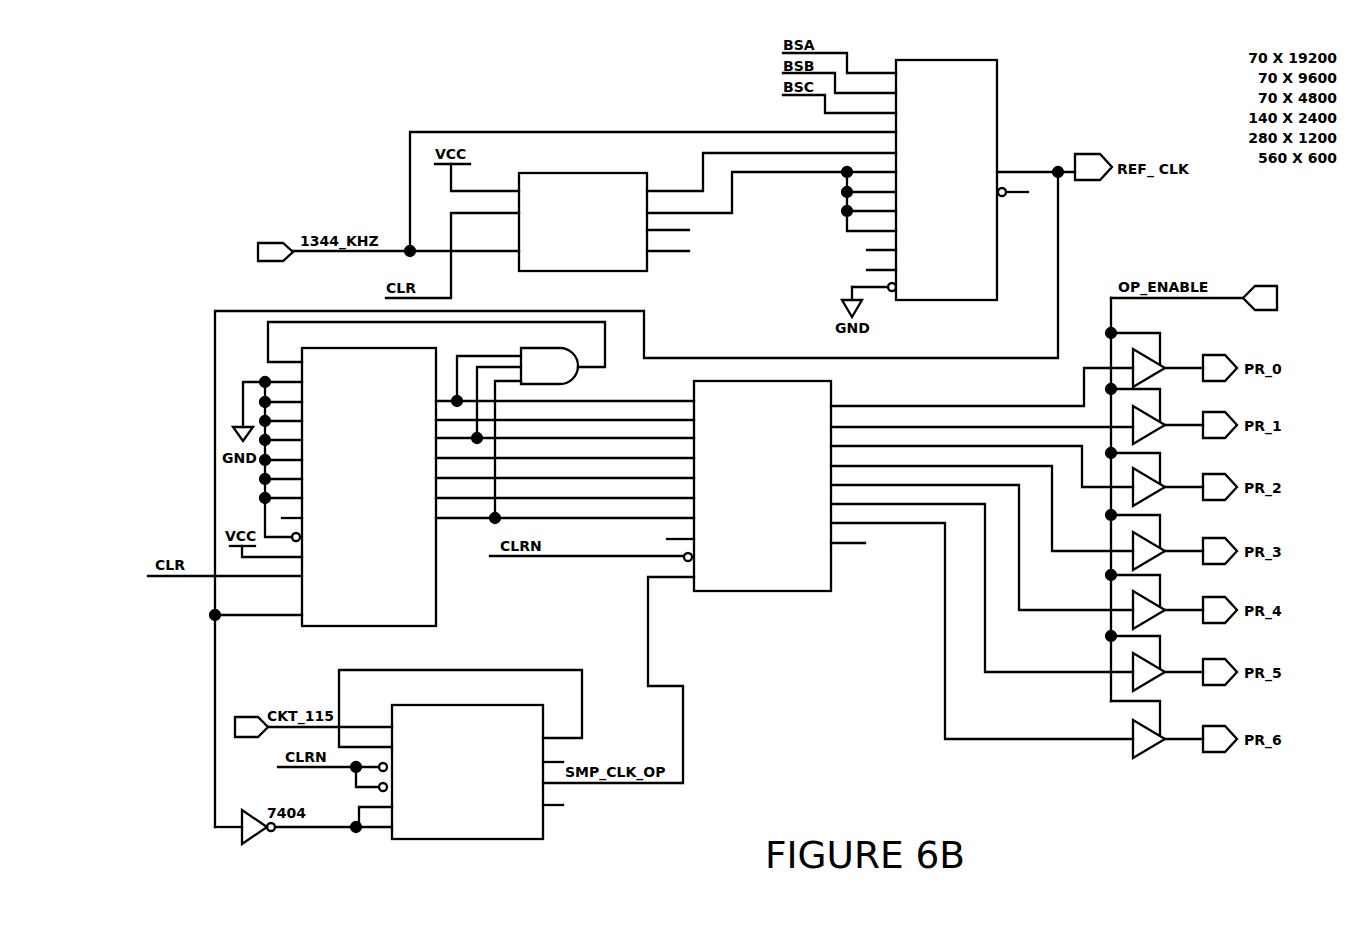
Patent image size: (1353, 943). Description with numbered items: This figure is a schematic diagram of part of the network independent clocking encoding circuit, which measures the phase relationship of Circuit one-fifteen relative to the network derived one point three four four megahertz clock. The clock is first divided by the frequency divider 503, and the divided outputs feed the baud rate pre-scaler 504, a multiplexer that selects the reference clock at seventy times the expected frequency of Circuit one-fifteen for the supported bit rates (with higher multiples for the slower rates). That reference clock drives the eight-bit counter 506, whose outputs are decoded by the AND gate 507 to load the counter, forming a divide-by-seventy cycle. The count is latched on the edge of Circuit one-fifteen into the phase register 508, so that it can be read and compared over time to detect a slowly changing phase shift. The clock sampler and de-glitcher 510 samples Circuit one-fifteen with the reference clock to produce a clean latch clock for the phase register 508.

The frequency divider (FREQDIV) 503 is at (578, 272).
The baud rate pre-scaler multiplexer (74151) 504 is at (984, 58).
The 8-bit counter phase comparator (8COUNT) 506 is at (412, 347).
The three-input AND gate 507 is at (582, 383).
The phase register (74273) 508 is at (838, 386).
The clock sampler and de-glitcher flip-flop (7474) 510 is at (497, 703).